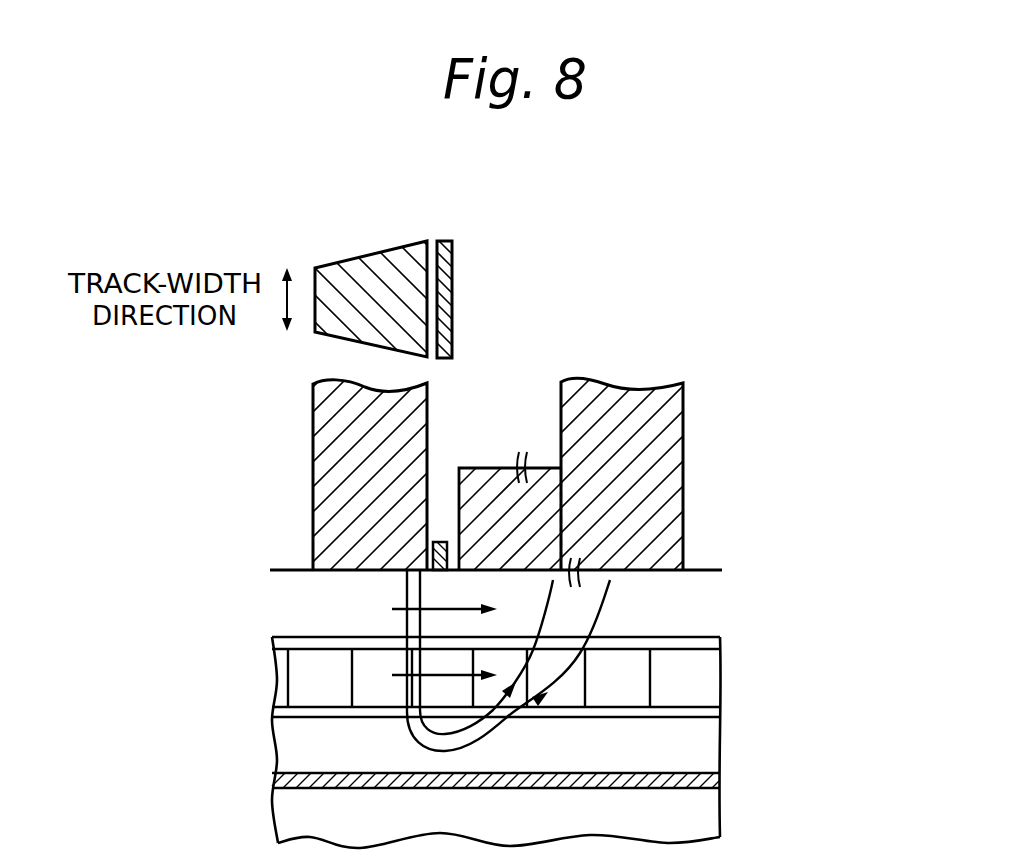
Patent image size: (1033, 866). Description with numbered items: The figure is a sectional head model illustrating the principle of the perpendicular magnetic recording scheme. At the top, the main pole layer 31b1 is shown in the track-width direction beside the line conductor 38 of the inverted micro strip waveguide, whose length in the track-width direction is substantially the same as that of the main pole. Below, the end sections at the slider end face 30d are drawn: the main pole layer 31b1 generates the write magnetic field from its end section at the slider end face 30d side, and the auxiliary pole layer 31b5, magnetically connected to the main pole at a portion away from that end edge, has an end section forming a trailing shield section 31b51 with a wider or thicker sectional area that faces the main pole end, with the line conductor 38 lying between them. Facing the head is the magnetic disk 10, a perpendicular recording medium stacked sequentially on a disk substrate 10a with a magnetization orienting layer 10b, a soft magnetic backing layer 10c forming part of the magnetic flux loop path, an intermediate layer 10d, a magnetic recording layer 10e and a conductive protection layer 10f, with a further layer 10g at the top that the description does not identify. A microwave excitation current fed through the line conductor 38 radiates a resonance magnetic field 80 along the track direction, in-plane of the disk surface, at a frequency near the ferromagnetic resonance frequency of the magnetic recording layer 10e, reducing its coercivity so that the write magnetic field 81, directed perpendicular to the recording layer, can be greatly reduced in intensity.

The main pole layer 31b1 is at (373, 287).
The line conductor 38 is at (442, 247).
The auxiliary pole layer 31b5 is at (655, 400).
The trailing shield section 31b51 is at (547, 530).
The slider end face 30d is at (705, 572).
The resonance magnetic field 80 is at (442, 672).
The write magnetic field 81 is at (410, 727).
The magnetic disk 10 is at (580, 721).
The disk substrate 10a is at (759, 828).
The magnetization orienting layer 10b is at (712, 778).
The soft magnetic backing layer 10c is at (700, 745).
The intermediate layer 10d is at (712, 713).
The magnetic recording layer 10e is at (708, 677).
The conductive protection layer 10f is at (710, 642).
The lubricant layer 10g is at (670, 635).